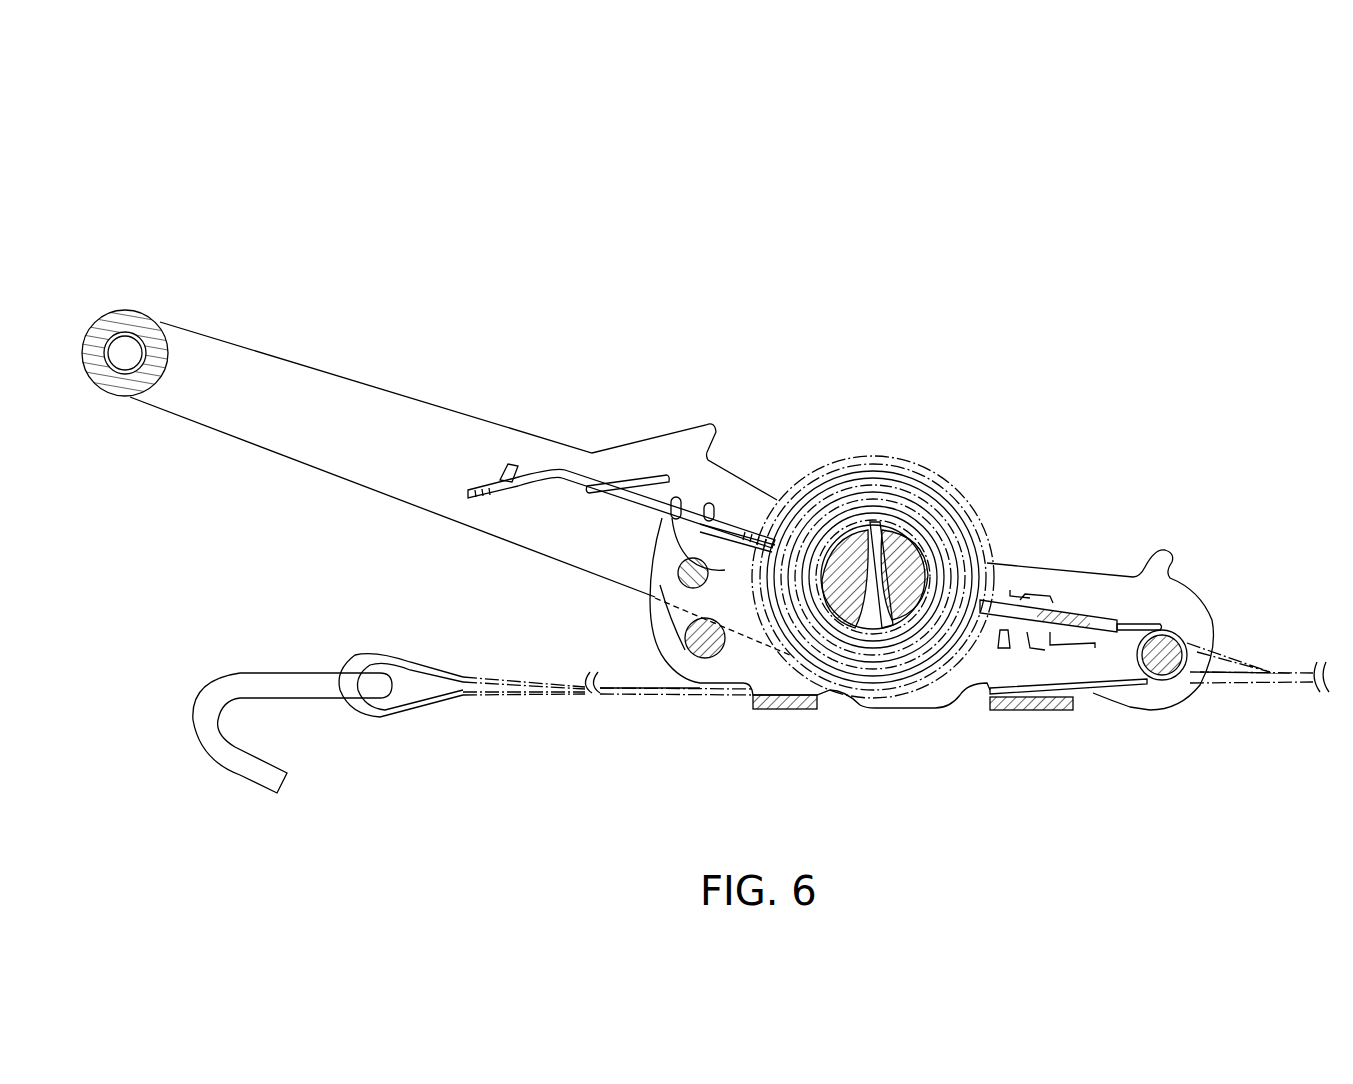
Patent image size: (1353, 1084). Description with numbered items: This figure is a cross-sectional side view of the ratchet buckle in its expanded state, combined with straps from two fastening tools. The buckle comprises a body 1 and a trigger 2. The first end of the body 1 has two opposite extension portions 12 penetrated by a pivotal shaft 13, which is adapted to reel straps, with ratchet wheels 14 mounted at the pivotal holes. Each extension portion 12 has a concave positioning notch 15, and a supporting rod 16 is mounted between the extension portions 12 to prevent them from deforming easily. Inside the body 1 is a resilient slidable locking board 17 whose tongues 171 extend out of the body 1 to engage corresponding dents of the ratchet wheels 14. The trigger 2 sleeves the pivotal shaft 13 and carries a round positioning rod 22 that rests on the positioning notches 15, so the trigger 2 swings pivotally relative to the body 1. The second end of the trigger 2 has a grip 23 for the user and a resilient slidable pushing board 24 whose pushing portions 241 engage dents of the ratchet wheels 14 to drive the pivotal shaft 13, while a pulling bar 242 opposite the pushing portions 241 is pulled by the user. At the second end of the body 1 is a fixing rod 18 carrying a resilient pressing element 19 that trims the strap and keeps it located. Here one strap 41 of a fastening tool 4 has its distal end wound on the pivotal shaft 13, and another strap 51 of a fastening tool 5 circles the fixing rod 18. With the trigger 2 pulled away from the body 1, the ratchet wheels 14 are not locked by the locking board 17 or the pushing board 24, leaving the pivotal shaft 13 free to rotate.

The body 1 is at (1049, 570).
The trigger 2 is at (392, 390).
The fastening tool 4 is at (368, 650).
The fastening tool 5 is at (1270, 668).
The extension portion 12 is at (663, 553).
The pivotal shaft 13 is at (896, 540).
The ratchet wheel 14 is at (940, 540).
The positioning notch 15 is at (660, 582).
The supporting rod 16 is at (703, 645).
The locking board 17 is at (1070, 618).
The fixing rod 18 is at (1163, 660).
The resilient pressing element 19 is at (1113, 686).
The positioning rod 22 is at (685, 572).
The grip 23 is at (115, 327).
The pushing board 24 is at (597, 483).
The strap 41 is at (723, 693).
The strap 51 is at (1300, 682).
The tongue 171 is at (1003, 650).
The pushing portion 241 is at (768, 540).
The pulling bar 242 is at (483, 498).